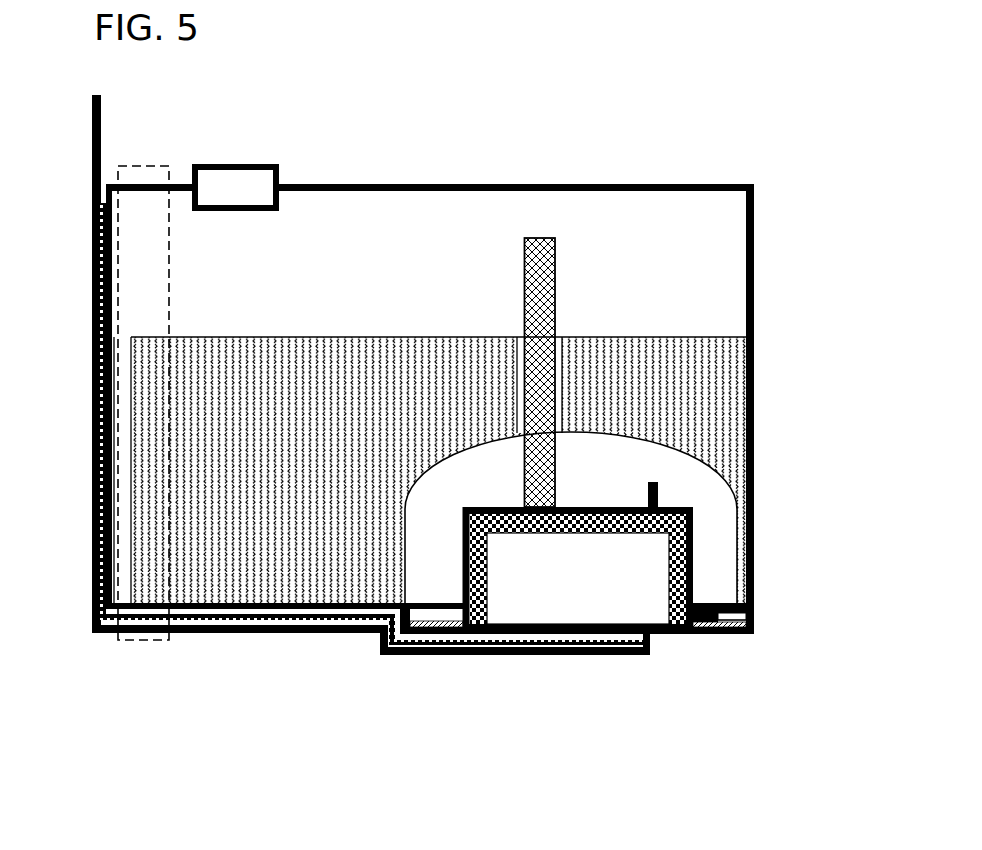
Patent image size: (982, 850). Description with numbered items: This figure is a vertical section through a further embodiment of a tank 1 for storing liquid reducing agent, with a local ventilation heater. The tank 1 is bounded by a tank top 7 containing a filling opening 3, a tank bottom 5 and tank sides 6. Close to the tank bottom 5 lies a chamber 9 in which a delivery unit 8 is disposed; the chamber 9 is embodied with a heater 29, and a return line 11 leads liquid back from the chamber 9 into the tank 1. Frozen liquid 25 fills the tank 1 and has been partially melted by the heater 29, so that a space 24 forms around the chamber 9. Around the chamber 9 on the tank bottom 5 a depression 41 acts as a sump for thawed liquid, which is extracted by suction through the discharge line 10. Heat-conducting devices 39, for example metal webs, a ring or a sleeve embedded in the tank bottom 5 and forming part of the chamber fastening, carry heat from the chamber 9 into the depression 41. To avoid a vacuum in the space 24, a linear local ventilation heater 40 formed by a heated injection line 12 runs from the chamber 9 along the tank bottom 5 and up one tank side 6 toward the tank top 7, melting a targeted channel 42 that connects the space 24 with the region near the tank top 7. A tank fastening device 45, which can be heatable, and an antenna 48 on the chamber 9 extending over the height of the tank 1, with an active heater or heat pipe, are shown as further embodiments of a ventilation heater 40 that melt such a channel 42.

The tank 1 is at (570, 205).
The filling opening 3 is at (257, 164).
The tank bottom 5 is at (243, 603).
The tank side 6 is at (752, 390).
The tank top 7 is at (397, 187).
The delivery unit 8 is at (583, 602).
The chamber 9 is at (577, 507).
The discharge line 10 is at (710, 634).
The return line 11 is at (658, 495).
The injection line 12 is at (377, 657).
The space 24 is at (458, 477).
The frozen liquid 25 is at (345, 340).
The heater 29 is at (200, 633).
The heat-conducting devices 39 is at (750, 634).
The local ventilation heater 40 is at (92, 443).
The depression 41 is at (730, 616).
The channel 42 is at (558, 348).
The tank fastening device 45 is at (147, 173).
The antenna 48 is at (553, 287).